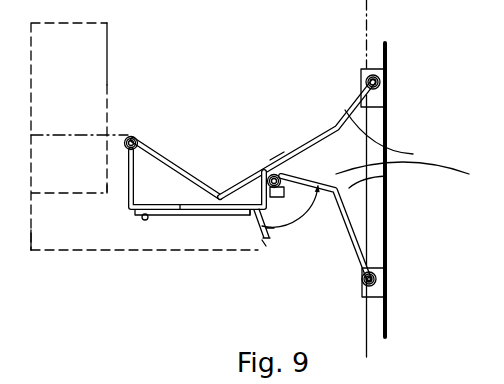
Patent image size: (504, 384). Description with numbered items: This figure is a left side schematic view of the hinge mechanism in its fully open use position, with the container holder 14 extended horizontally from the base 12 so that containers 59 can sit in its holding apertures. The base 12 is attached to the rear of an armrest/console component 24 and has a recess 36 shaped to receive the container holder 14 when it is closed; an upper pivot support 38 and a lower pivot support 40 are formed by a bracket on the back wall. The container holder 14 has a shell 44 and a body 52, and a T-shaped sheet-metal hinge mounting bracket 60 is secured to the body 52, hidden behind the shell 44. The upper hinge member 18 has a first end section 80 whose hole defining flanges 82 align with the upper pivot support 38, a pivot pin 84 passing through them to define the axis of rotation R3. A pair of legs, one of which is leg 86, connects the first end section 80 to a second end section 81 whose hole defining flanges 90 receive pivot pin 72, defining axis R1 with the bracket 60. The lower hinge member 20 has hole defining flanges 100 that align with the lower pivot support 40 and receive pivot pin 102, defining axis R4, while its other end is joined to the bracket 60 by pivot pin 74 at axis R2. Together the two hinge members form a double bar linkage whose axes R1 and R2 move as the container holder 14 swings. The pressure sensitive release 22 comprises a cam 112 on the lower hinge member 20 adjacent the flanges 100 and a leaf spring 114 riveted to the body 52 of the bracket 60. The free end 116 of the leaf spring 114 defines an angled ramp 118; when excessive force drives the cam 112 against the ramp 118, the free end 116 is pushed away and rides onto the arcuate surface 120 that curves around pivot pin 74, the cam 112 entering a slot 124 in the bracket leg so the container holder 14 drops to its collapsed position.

The base 12 is at (387, 203).
The container holder 14 is at (118, 253).
The upper hinge member 18 is at (329, 127).
The lower hinge member 20 is at (351, 238).
The pressure sensitive release 22 is at (244, 318).
The armrest/console component 24 is at (387, 45).
The recess 36 is at (387, 178).
The upper pivot support 38 is at (387, 110).
The lower pivot support 40 is at (385, 313).
The shell 44 is at (97, 252).
The body 52 is at (118, 135).
The containers 59 is at (107, 33).
The hinge mounting bracket 60 is at (127, 198).
The pivot pin 72 is at (132, 137).
The pivot pin 74 is at (268, 175).
The first end section 80 is at (413, 154).
The second end section 81 is at (178, 162).
The hole defining flanges 82 is at (363, 68).
The pivot pin 84 is at (384, 69).
The leg 86 is at (277, 160).
The hole defining flanges 90 is at (140, 142).
The hole defining flanges 100 is at (383, 292).
The pivot pin 102 is at (362, 286).
The cam 112 is at (414, 177).
The leaf spring 114 is at (193, 213).
The free end 116 is at (240, 213).
The angled ramp 118 is at (259, 251).
The arcuate surface 120 is at (292, 221).
The slot 124 is at (270, 230).
The axis of rotation R1 is at (126, 150).
The axis of rotation R2 is at (284, 197).
The axis of rotation R3 is at (384, 88).
The axis of rotation R4 is at (380, 272).